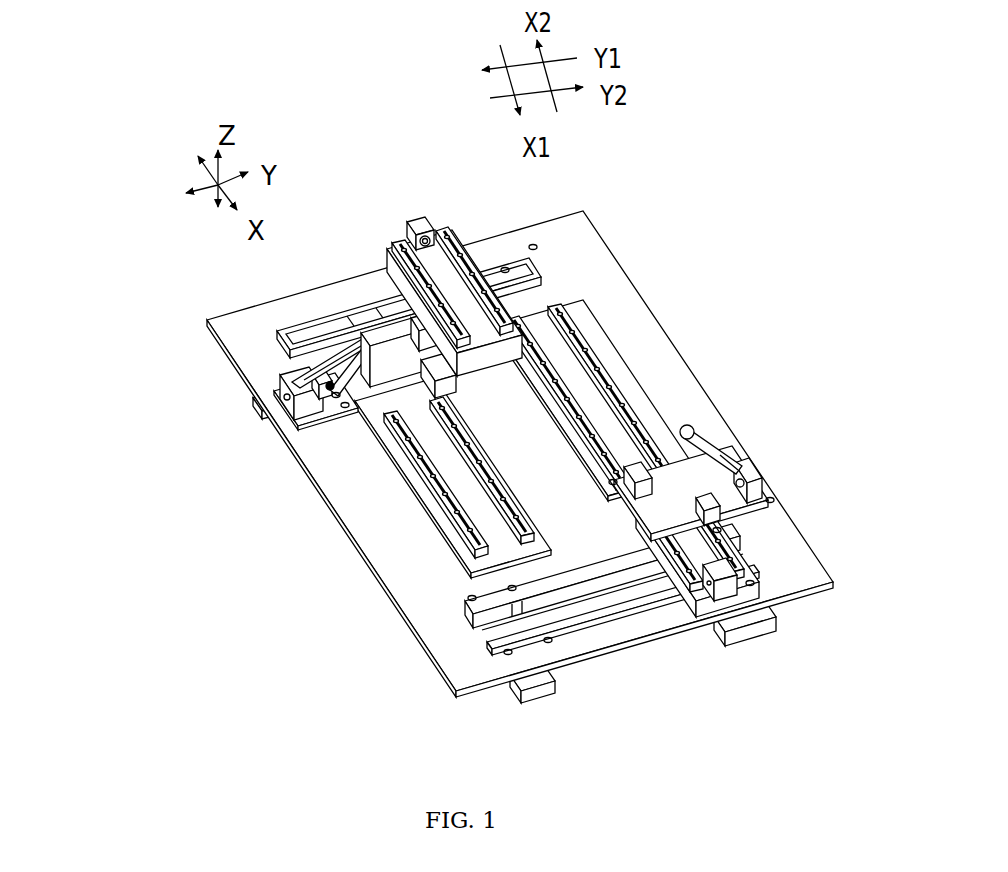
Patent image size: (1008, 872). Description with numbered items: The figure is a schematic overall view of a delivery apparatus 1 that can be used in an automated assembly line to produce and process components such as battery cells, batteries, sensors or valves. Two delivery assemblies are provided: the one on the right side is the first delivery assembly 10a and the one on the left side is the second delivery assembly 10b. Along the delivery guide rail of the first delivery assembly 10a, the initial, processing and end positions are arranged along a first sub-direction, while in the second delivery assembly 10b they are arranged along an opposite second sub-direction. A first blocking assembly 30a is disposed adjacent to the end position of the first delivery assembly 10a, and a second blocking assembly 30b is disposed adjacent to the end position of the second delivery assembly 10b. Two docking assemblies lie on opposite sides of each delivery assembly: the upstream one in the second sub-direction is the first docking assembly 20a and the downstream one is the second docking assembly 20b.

The delivery apparatus 1 is at (5, 140).
The first delivery assembly 10a is at (624, 402).
The second delivery assembly 10b is at (448, 500).
The first docking assembly 20a is at (718, 596).
The second docking assembly 20b is at (404, 243).
The first blocking assembly 30a is at (774, 490).
The second blocking assembly 30b is at (280, 380).